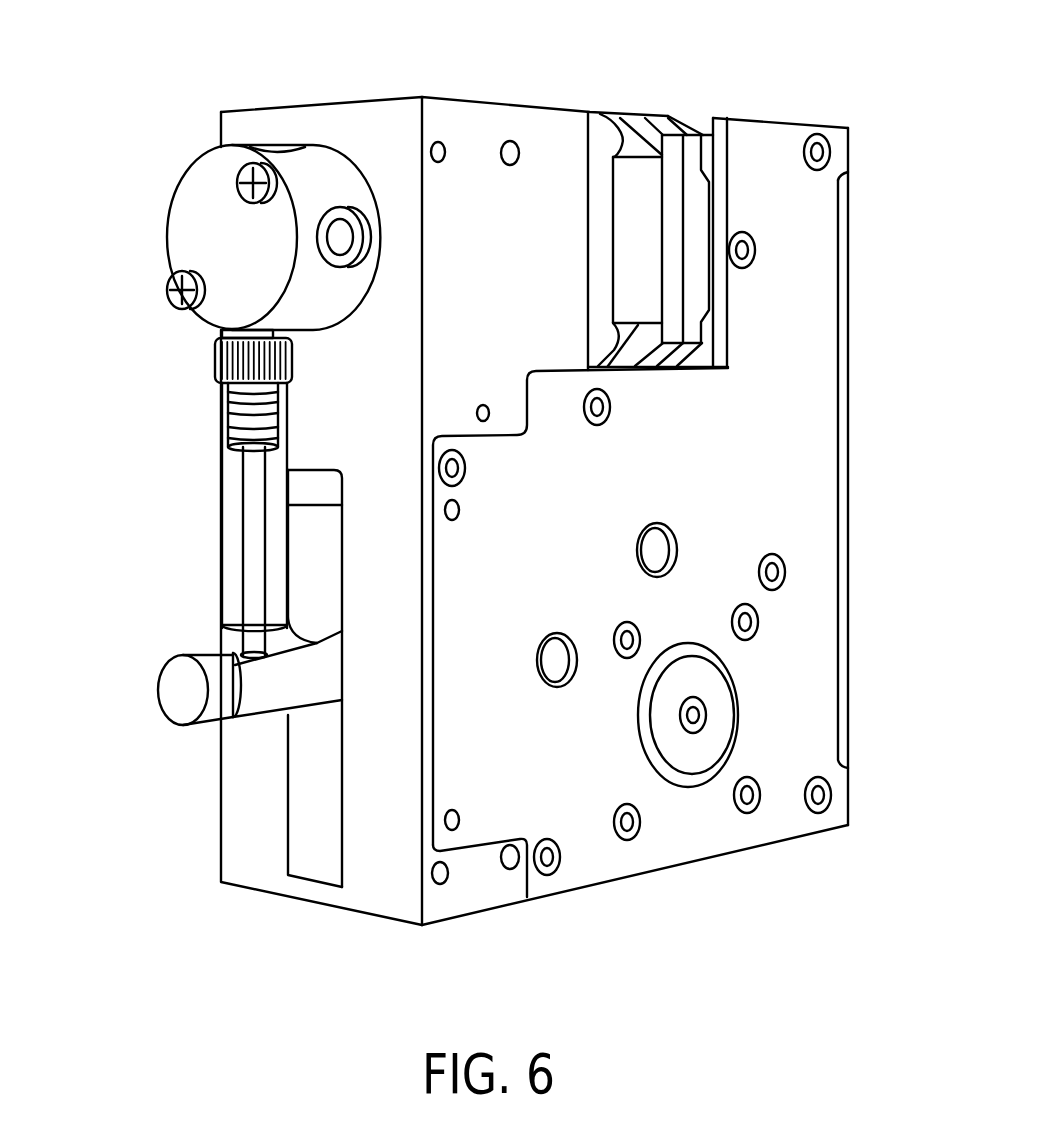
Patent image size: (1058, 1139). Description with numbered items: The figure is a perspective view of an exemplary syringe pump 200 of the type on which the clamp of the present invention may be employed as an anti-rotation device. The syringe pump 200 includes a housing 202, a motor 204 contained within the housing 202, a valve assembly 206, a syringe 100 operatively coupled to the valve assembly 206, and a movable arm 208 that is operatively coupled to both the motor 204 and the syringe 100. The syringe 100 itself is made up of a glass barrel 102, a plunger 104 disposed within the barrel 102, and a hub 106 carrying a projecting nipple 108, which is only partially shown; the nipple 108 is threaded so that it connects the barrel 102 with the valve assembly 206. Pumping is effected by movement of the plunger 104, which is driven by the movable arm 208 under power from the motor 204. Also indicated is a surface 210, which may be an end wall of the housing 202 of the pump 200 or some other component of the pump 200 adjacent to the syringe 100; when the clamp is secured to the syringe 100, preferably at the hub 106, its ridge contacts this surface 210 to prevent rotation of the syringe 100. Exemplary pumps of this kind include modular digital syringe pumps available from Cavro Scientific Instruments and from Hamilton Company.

The syringe 100 is at (176, 482).
The glass barrel 102 is at (230, 518).
The plunger 104 is at (238, 571).
The hub 106 is at (217, 353).
The projecting nipple 108 is at (220, 333).
The syringe pump 200 is at (683, 472).
The housing 202 is at (260, 108).
The motor 204 is at (718, 703).
The valve assembly 206 is at (205, 202).
The movable arm 208 is at (247, 727).
The surface 210 is at (357, 913).